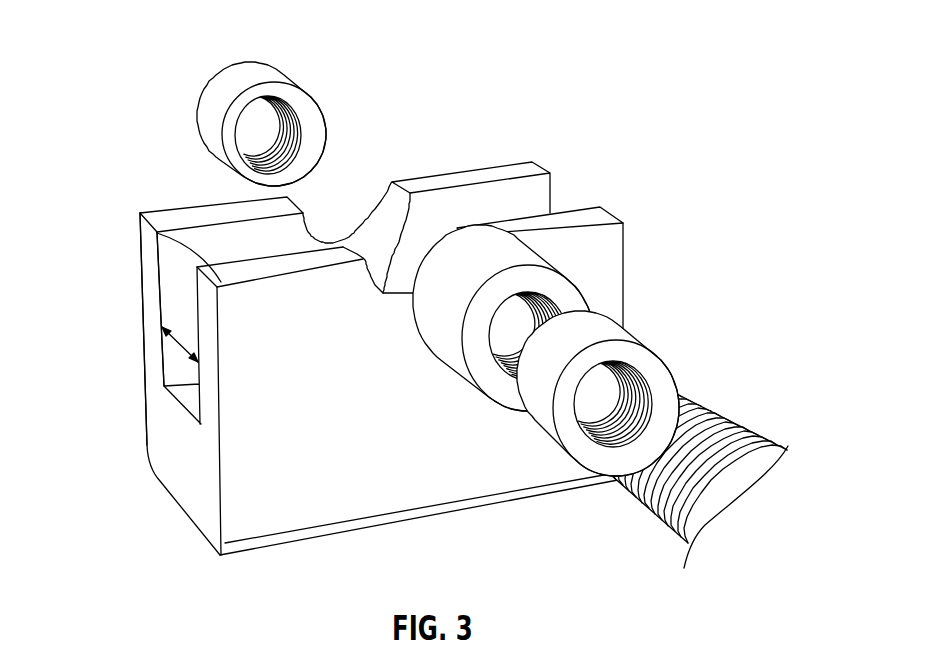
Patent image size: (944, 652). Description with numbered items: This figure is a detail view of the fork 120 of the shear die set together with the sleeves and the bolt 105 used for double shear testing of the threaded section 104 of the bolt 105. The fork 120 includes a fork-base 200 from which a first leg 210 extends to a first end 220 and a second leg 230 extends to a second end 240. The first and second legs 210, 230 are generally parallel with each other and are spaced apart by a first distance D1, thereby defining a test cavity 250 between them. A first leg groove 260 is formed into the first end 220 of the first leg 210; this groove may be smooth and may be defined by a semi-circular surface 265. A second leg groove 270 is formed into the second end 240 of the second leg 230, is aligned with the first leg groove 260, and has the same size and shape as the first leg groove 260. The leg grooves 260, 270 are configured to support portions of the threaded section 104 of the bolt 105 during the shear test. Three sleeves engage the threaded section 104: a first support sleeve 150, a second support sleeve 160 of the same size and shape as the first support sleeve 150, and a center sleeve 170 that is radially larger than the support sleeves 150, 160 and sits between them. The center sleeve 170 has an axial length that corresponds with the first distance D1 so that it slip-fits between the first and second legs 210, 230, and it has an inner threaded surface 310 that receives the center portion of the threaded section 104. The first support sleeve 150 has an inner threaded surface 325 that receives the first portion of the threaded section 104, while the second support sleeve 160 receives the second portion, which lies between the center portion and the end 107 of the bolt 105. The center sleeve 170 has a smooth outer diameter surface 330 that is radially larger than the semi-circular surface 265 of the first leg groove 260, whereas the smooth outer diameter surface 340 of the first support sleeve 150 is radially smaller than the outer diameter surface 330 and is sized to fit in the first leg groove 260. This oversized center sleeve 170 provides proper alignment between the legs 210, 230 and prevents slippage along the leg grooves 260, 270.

The threaded section 104 is at (757, 475).
The bolt 105 is at (632, 503).
The end of the bolt 107 is at (662, 372).
The fork 120 is at (262, 520).
The first support sleeve 150 is at (533, 412).
The second support sleeve 160 is at (241, 77).
The center sleeve 170 is at (447, 368).
The fork-base 200 is at (195, 500).
The first leg 210 is at (198, 404).
The first end 220 is at (155, 233).
The second leg 230 is at (153, 290).
The second end 240 is at (160, 223).
The test cavity 250 is at (573, 192).
The first leg groove 260 is at (450, 183).
The semi-circular surface 265 is at (410, 303).
The second leg groove 270 is at (373, 228).
The inner threaded surface 310 is at (557, 330).
The inner threaded surface 325 is at (668, 382).
The outer diameter surface 330 is at (480, 260).
The outer diameter surface 340 is at (593, 340).
The first distance D1 is at (177, 350).